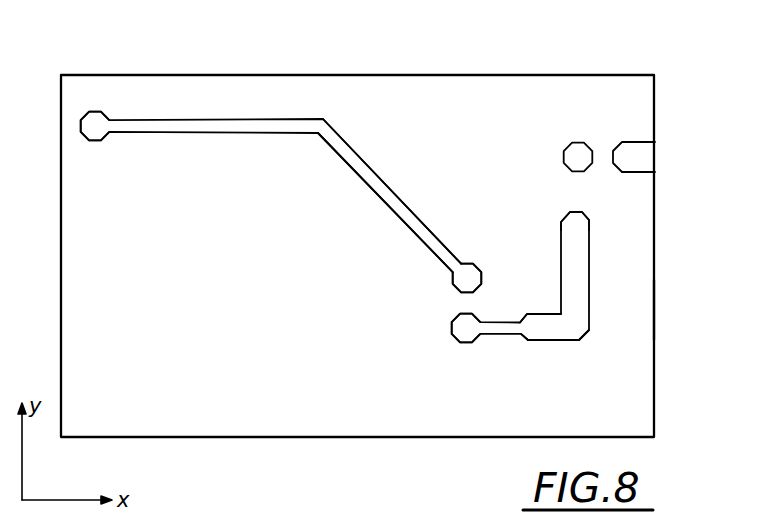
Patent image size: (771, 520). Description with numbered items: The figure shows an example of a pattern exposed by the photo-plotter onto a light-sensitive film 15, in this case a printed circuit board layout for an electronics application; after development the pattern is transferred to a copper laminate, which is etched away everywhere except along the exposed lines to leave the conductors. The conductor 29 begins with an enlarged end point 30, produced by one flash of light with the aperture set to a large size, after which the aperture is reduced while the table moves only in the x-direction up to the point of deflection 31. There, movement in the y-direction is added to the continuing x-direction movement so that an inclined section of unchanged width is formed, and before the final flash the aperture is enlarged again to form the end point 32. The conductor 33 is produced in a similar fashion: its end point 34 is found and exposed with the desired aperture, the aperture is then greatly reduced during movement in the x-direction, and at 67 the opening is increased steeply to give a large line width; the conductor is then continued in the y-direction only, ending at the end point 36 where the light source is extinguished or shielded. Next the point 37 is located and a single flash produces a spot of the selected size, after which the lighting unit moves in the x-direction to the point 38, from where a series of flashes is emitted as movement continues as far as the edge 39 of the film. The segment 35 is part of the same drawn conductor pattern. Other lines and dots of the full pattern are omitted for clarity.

The light-sensitive film 15 is at (642, 348).
The conductor 29 is at (155, 118).
The enlarged end point 30 is at (99, 112).
The point of deflection 31 is at (328, 118).
The end point 32 is at (466, 262).
The conductor 33 is at (580, 273).
The end point 34 is at (463, 338).
The lower trace segment 35 is at (582, 340).
The end point 36 is at (578, 222).
The point 37 is at (576, 148).
The point 38 is at (623, 150).
The edge of the film 39 is at (655, 308).
The aperture increase point 67 is at (521, 314).